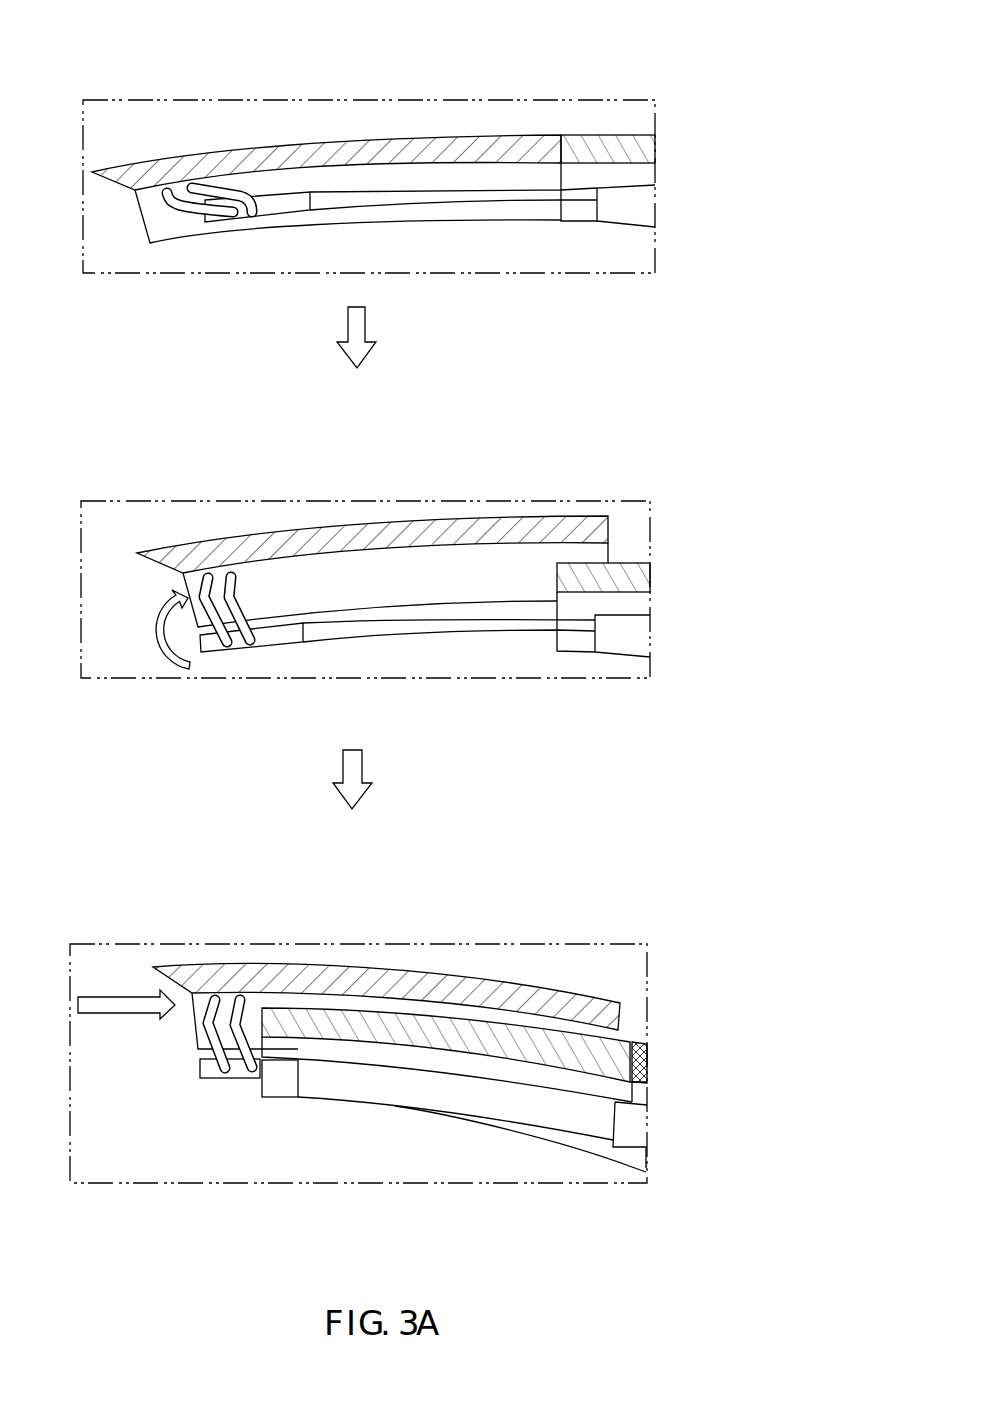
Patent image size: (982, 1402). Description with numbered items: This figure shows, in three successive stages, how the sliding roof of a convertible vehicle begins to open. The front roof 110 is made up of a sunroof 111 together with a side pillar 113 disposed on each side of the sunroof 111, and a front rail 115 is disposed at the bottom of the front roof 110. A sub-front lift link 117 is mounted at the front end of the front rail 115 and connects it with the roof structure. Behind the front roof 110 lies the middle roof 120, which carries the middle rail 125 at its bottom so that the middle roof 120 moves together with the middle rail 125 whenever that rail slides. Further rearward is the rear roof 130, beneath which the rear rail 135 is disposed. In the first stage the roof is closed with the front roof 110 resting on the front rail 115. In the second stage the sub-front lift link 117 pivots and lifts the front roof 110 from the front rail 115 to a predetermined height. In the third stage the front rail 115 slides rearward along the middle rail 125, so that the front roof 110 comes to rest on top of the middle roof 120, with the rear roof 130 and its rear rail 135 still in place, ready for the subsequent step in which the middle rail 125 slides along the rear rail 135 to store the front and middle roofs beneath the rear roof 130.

The front roof 110 is at (437, 34).
The sunroof 111 is at (425, 147).
The side pillar 113 is at (320, 183).
The front rail 115 is at (433, 197).
The sub-front lift link 117 is at (197, 207).
The middle roof 120 is at (645, 148).
The middle rail 125 is at (628, 208).
The rear roof 130 is at (645, 1062).
The rear rail 135 is at (635, 1128).